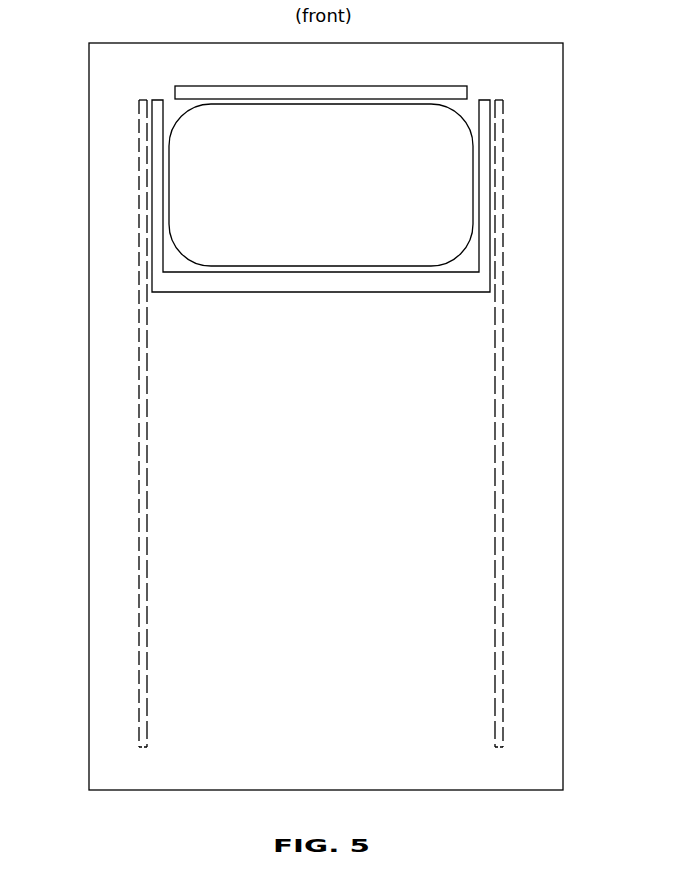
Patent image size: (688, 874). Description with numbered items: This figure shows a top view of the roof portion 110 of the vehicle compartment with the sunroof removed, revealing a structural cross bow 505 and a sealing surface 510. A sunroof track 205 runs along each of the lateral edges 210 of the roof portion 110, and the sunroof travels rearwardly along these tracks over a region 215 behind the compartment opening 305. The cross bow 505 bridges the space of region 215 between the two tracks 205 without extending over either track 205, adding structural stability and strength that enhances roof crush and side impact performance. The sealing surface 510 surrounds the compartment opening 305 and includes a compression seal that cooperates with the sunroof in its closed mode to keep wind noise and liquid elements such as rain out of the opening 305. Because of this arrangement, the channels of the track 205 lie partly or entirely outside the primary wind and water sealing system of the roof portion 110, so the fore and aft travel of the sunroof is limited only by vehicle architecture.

The roof portion 110 is at (102, 92).
The sunroof track 205 is at (152, 400).
The lateral edges 210 is at (98, 475).
The region 215 is at (338, 414).
The compartment opening 305 is at (338, 194).
The structural cross bow 505 is at (176, 282).
The sealing surface 510 is at (413, 85).